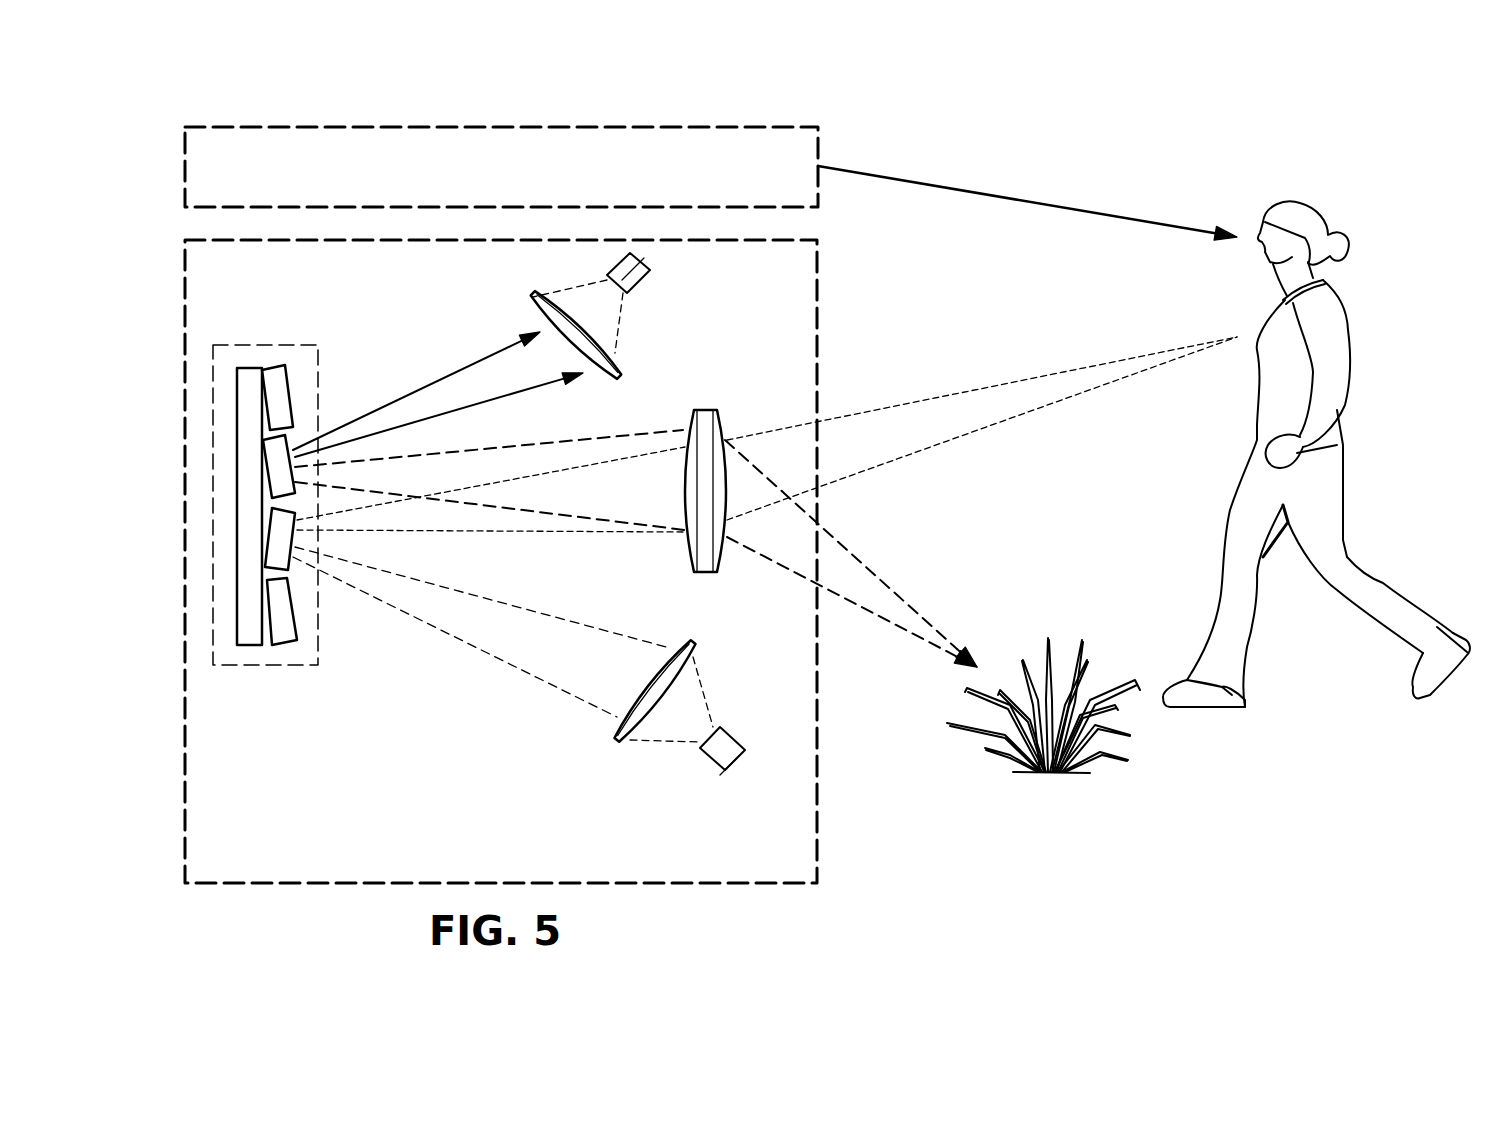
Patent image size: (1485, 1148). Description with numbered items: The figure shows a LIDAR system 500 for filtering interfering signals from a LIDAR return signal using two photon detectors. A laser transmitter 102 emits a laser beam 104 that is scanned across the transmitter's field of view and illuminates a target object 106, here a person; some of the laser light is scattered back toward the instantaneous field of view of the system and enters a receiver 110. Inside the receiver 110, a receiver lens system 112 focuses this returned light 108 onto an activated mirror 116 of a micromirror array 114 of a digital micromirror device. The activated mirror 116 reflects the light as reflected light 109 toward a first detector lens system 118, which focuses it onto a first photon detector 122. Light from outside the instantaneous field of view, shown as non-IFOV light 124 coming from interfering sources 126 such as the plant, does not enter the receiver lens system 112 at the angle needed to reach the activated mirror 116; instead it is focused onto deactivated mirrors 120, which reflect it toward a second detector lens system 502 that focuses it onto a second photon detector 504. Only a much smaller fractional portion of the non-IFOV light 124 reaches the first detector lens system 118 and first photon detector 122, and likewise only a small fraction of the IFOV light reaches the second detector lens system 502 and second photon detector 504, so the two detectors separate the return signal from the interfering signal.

The LIDAR system 500 is at (940, 108).
The laser transmitter 102 is at (183, 167).
The laser beam 104 is at (1015, 200).
The target object 106 is at (1303, 202).
The reflected light from person 108 is at (487, 533).
The reflected light 109 is at (467, 642).
The receiver 110 is at (171, 290).
The receiver lens system 112 is at (707, 407).
The micromirror array 114 is at (242, 681).
The activated mirror 116 is at (297, 537).
The first detector lens system 118 is at (617, 740).
The deactivated mirrors 120 is at (270, 368).
The first photon detector 122 is at (710, 763).
The non-IFOV light 124 is at (630, 430).
The interfering sources 126 is at (1053, 773).
The second detector lens system 502 is at (532, 293).
The second photon detector 504 is at (642, 290).